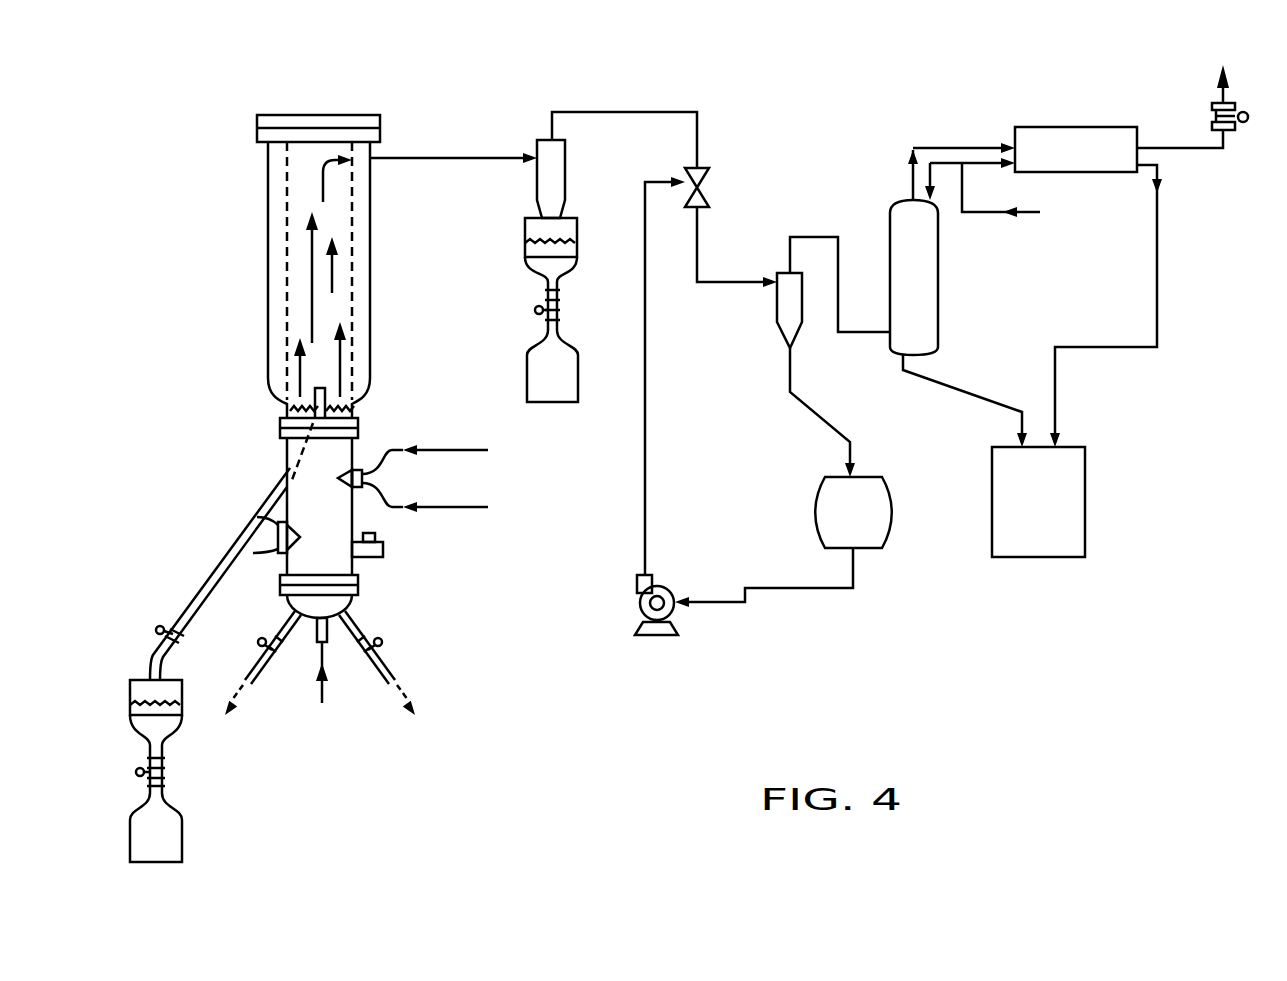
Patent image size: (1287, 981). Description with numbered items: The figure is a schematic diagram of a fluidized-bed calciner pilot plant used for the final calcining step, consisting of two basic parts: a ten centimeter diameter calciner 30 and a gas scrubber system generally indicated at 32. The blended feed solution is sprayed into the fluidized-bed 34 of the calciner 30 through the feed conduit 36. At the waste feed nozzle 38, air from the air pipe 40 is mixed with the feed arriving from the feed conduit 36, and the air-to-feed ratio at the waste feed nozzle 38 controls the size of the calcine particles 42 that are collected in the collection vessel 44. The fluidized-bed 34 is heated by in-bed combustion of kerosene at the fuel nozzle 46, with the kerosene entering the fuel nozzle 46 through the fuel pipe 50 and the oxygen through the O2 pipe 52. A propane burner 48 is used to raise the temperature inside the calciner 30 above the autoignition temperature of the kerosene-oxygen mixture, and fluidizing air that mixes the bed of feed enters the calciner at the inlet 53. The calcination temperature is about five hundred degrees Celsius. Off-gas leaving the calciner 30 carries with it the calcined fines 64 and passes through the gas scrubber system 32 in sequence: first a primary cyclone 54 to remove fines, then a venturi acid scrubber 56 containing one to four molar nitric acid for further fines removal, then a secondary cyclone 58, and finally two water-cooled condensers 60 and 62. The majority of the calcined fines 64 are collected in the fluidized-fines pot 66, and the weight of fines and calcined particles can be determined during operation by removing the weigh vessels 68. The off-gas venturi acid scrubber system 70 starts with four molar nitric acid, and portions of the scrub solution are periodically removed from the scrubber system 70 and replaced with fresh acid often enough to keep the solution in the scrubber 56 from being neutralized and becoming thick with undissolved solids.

The calciner 30 is at (238, 268).
The gas scrubber system 32 is at (800, 90).
The fluidized-bed 34 is at (290, 412).
The feed conduit 36 is at (452, 508).
The waste feed nozzle 38 is at (362, 478).
The air pipe 40 is at (443, 449).
The calcine particles 42 is at (145, 717).
The collection vessel 44 is at (130, 683).
The fuel nozzle 46 is at (277, 537).
The propane burner 48 is at (383, 548).
The fuel pipe 50 is at (207, 570).
The O2 pipe 52 is at (253, 517).
The fluidizing air inlet 53 is at (322, 697).
The primary cyclone 54 is at (565, 165).
The venturi acid scrubber 56 is at (709, 187).
The secondary cyclone 58 is at (777, 305).
The water-cooled condenser 60 is at (938, 275).
The water-cooled condenser 62 is at (1072, 127).
The calcined fines 64 is at (537, 258).
The fluidized-fines pot 66 is at (525, 228).
The weigh vessels 68 is at (172, 812).
The venturi acid scrubber system 70 is at (905, 595).